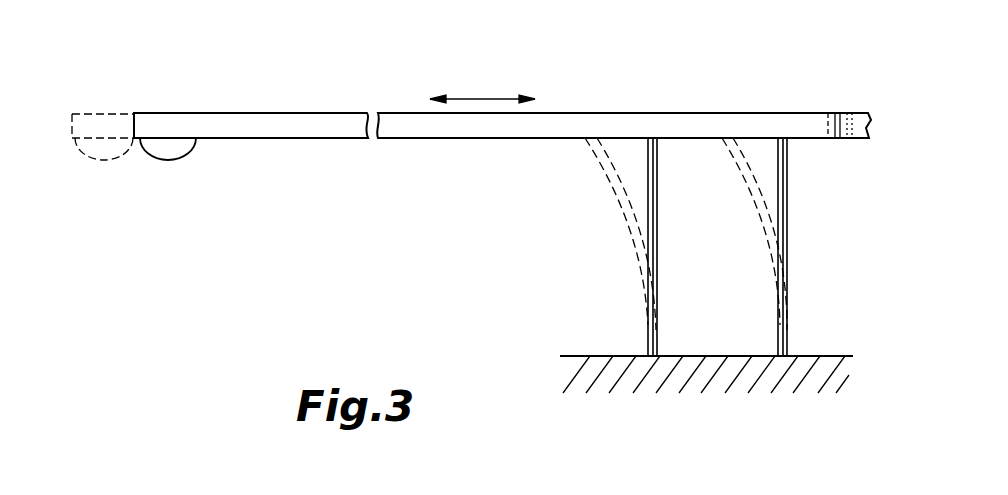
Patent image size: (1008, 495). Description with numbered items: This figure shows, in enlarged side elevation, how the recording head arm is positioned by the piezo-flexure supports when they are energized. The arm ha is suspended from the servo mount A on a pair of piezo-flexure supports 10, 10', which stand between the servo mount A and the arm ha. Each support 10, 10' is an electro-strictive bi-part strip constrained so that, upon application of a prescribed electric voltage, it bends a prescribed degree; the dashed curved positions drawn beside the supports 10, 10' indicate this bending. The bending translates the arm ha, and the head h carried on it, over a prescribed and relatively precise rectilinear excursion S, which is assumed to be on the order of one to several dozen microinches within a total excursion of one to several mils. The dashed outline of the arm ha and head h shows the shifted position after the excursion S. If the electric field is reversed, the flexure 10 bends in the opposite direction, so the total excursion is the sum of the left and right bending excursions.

The arm ha is at (704, 112).
The head h is at (172, 160).
The excursion S is at (134, 107).
The piezo-flexure support 10 is at (589, 247).
The piezo-flexure support 10' is at (802, 247).
The servo mount A is at (830, 355).